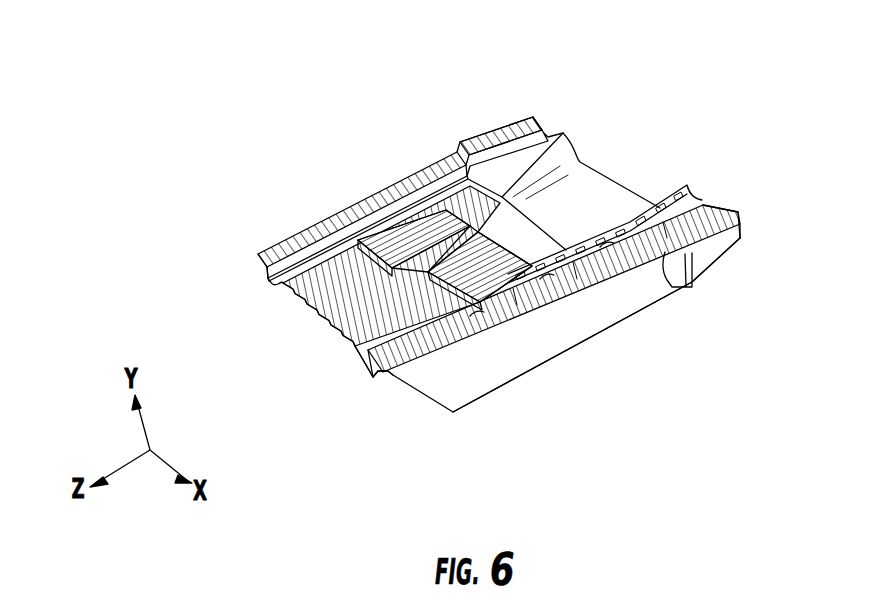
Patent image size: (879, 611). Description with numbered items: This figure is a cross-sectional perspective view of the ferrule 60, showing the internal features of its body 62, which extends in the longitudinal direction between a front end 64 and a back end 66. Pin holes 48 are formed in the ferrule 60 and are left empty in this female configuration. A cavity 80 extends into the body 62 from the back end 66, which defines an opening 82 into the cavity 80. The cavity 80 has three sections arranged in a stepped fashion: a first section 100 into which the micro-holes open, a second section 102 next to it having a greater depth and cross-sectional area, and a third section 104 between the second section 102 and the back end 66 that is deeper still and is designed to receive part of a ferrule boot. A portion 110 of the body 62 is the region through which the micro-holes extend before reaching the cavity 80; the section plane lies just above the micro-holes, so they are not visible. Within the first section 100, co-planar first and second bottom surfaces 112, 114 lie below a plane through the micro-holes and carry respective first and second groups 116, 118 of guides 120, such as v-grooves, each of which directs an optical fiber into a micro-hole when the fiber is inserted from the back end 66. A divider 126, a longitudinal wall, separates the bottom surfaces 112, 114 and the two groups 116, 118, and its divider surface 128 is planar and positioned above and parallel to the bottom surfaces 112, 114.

The ferrule 60 is at (481, 249).
The body 62 is at (347, 212).
The front end 64 is at (257, 258).
The back end 66 is at (533, 117).
The cavity 80 is at (464, 244).
The opening 82 is at (618, 178).
The pin holes 48 is at (277, 279).
The first section 100 is at (513, 305).
The second section 102 is at (587, 289).
The third section 104 is at (681, 290).
The portion of the body 110 is at (418, 303).
The first bottom surface 112 is at (412, 225).
The second bottom surface 114 is at (483, 226).
The first group of guides 116 is at (368, 258).
The second group of guides 118 is at (372, 347).
The guides 120 is at (513, 260).
The divider 126 is at (410, 278).
The divider surface 128 is at (418, 228).